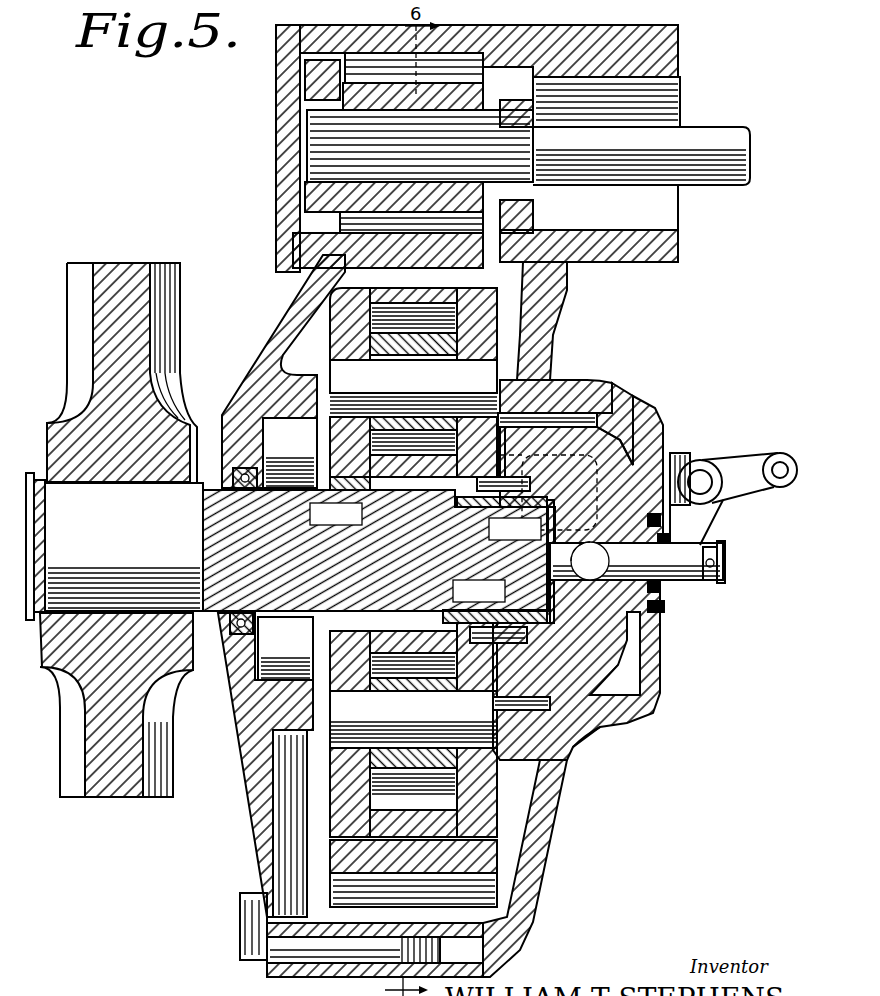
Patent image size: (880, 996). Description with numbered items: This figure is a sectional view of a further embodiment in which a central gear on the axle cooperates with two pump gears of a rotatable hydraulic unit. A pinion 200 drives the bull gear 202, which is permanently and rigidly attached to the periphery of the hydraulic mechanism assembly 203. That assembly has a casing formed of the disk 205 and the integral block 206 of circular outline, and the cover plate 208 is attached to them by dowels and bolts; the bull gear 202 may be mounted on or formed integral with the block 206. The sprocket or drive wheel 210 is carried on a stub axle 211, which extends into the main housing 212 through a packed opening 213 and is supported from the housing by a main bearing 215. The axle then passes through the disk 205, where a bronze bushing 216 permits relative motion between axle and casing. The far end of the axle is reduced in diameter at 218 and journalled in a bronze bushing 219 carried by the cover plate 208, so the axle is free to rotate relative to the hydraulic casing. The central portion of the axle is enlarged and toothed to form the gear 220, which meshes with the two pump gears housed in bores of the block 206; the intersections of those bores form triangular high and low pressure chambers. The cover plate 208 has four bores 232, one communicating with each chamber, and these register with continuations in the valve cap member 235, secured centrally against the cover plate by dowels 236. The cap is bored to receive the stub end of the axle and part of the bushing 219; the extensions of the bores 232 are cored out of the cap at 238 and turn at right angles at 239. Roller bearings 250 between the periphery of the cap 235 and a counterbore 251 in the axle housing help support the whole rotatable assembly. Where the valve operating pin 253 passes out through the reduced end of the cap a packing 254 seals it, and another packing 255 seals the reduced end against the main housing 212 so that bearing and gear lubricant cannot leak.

The pinion 200 is at (470, 68).
The bull gear 202 is at (483, 260).
The hydraulic mechanism assembly 203 is at (460, 327).
The disk 205 is at (337, 345).
The integral block 206 is at (410, 283).
The cover plate 208 is at (505, 355).
The sprocket or drive wheel 210 is at (44, 790).
The stub axle 211 is at (114, 546).
The main housing 212 is at (563, 790).
The packed opening 213 is at (217, 617).
The main bearing 215 is at (273, 428).
The bronze bushing 216 is at (470, 611).
The reduced-diameter end of axle 218 is at (502, 502).
The bronze bushing 219 is at (495, 616).
The gear 220 is at (403, 473).
The bores 232 is at (464, 410).
The valve cap member 235 is at (587, 450).
The dowels 236 is at (479, 661).
The bore extensions 238 is at (583, 437).
The right-angle turn 239 is at (690, 523).
The roller bearings 250 is at (643, 717).
The counterbore 251 is at (583, 740).
The valve operating pin 253 is at (707, 581).
The packing 254 is at (670, 590).
The packing 255 is at (667, 613).